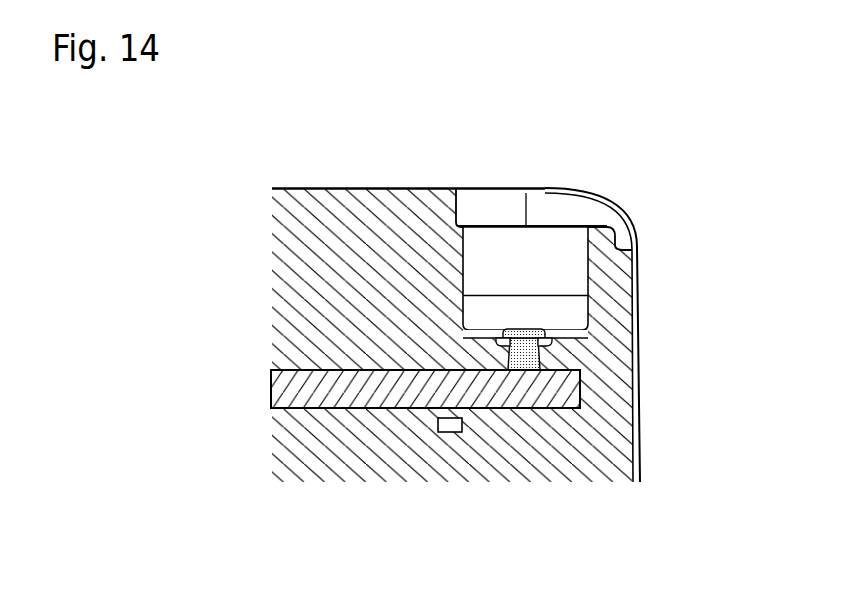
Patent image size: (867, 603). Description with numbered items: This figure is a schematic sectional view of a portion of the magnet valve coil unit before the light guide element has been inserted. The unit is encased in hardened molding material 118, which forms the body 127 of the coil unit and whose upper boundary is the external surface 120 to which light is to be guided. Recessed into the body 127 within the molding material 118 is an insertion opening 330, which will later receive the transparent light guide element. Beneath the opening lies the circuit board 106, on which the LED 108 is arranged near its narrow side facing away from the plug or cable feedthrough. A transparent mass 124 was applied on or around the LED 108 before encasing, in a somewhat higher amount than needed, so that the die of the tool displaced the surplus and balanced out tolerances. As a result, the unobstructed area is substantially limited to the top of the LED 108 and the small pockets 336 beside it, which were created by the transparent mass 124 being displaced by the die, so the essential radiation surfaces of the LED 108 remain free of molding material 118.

The circuit board 106 is at (285, 396).
The LED 108 is at (527, 360).
The molding material 118 is at (282, 218).
The external surface 120 is at (326, 188).
The transparent mass 124 is at (532, 331).
The body 127 is at (644, 462).
The insertion opening 330 is at (563, 265).
The pockets 336 is at (553, 342).